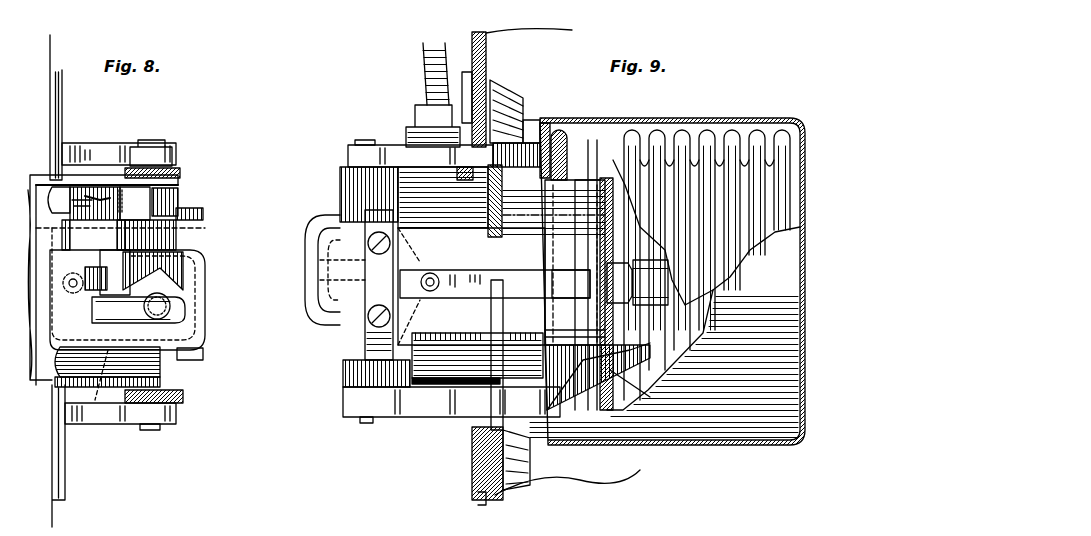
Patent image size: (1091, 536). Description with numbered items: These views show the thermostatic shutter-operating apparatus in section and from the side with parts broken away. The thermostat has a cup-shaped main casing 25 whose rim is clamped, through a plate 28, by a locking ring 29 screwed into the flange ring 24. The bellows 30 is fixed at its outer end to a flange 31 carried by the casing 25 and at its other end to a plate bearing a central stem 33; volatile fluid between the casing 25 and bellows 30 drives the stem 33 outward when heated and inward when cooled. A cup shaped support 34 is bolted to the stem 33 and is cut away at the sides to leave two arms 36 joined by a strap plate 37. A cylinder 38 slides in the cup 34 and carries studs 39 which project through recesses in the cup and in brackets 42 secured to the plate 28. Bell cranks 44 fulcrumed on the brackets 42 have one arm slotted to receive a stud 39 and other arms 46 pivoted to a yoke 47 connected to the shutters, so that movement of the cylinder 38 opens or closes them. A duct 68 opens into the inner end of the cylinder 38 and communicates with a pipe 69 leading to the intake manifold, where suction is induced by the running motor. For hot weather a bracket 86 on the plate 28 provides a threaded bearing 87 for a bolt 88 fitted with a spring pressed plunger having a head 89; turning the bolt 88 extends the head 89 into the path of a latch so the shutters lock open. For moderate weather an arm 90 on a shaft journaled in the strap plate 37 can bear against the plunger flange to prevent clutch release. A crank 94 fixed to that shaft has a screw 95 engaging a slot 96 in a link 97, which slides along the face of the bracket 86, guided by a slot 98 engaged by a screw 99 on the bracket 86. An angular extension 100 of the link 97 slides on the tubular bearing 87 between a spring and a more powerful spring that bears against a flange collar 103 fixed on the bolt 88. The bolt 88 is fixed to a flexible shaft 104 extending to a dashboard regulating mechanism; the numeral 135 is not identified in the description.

In FIG. 8, the flange ring 24 is at (63, 95).
In FIG. 9, the flange ring 24 is at (488, 88).
In FIG. 9, the main casing 25 is at (628, 108).
In FIG. 9, the plate 28 is at (505, 305).
In FIG. 9, the locking ring 29 is at (475, 455).
In FIG. 9, the bellows 30 is at (685, 132).
In FIG. 9, the flange 31 is at (540, 125).
In FIG. 9, the central stem 33 is at (637, 282).
In FIG. 9, the cup shaped support 34 is at (554, 262).
In FIG. 9, the arms 36 is at (471, 286).
In FIG. 8, the strap plate 37 is at (205, 356).
In FIG. 9, the strap plate 37 is at (380, 352).
In FIG. 8, the cylinder 38 is at (178, 192).
In FIG. 9, the cylinder 38 is at (445, 378).
In FIG. 9, the studs 39 is at (530, 460).
In FIG. 9, the brackets 42 is at (452, 400).
In FIG. 8, the bell cranks 44 is at (72, 465).
In FIG. 9, the bell cranks 44 is at (410, 420).
In FIG. 8, the arms 46 is at (178, 424).
In FIG. 9, the arms 46 is at (352, 420).
In FIG. 8, the yoke 47 is at (185, 396).
In FIG. 9, the yoke 47 is at (343, 390).
In FIG. 9, the duct 68 is at (540, 298).
In FIG. 9, the pipe 69 is at (432, 292).
In FIG. 8, the bracket 86 is at (200, 335).
In FIG. 8, the threaded bearing 87 is at (122, 190).
In FIG. 8, the bolt 88 is at (100, 194).
In FIG. 8, the head 89 is at (100, 270).
In FIG. 8, the arm 90 is at (250, 270).
In FIG. 8, the crank 94 is at (185, 262).
In FIG. 8, the screw 95 is at (188, 311).
In FIG. 8, the slot 96 is at (170, 300).
In FIG. 8, the link 97 is at (135, 256).
In FIG. 9, the link 97 is at (335, 300).
In FIG. 8, the slot 98 is at (108, 395).
In FIG. 8, the screw 99 is at (99, 218).
In FIG. 8, the angular extension 100 is at (77, 195).
In FIG. 9, the flange collar 103 is at (412, 125).
In FIG. 9, the flexible shaft 104 is at (425, 62).
In FIG. 9, the base line 135 is at (546, 503).